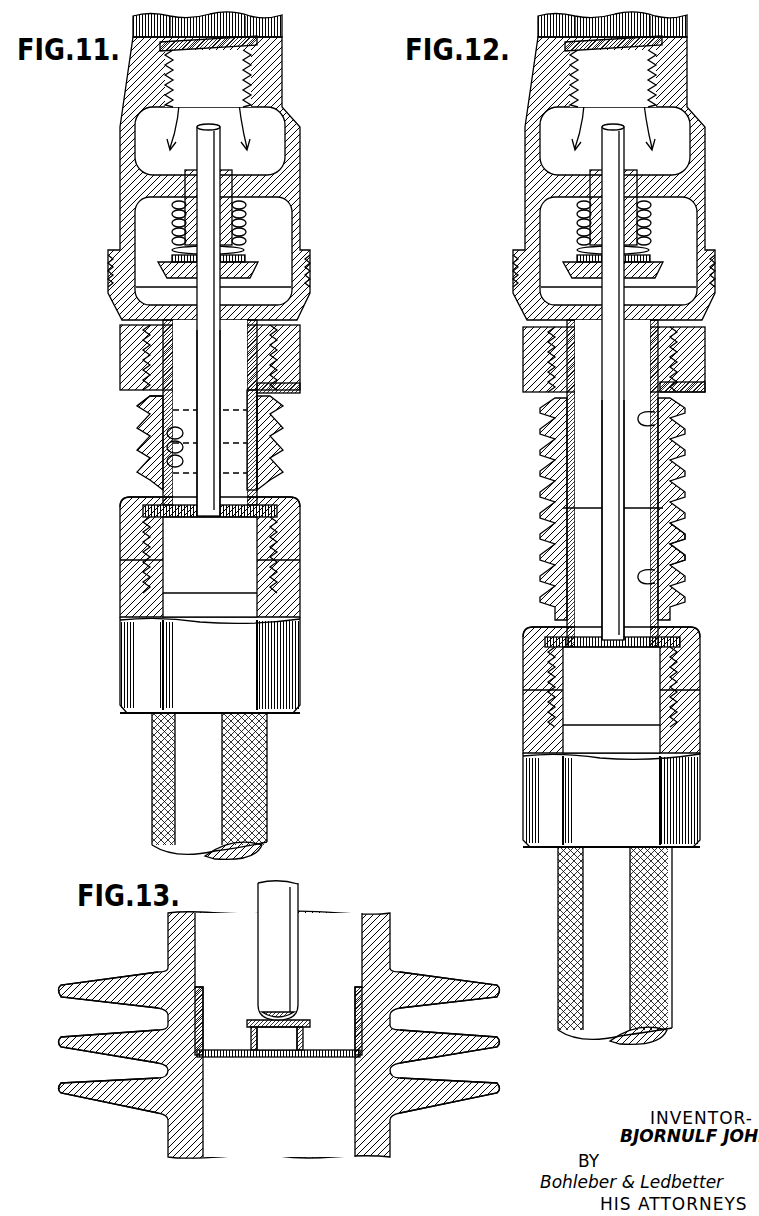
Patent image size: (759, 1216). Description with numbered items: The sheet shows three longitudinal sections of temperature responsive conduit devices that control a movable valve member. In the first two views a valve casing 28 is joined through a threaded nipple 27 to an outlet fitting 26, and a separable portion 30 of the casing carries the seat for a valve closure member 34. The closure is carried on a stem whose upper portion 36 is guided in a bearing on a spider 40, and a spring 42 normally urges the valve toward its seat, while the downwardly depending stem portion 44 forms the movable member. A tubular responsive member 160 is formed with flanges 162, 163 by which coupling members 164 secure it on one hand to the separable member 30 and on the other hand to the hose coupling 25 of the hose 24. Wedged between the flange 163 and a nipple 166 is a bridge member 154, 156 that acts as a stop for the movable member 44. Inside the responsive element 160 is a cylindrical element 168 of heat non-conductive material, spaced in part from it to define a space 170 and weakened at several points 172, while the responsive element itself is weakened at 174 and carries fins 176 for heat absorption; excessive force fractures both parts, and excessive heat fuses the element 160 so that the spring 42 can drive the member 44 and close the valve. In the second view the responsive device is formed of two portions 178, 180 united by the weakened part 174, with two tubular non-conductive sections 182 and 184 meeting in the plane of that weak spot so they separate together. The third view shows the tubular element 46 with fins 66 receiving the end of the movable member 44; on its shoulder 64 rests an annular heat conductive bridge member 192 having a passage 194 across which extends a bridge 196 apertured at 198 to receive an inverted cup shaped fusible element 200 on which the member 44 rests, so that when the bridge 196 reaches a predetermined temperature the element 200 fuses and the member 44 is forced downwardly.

In FIG. 11, the hose 24 is at (175, 770).
In FIG. 12, the hose 24 is at (655, 888).
In FIG. 11, the coupling member 25 is at (290, 606).
In FIG. 12, the coupling member 25 is at (690, 732).
In FIG. 11, the outlet fitting 26 is at (282, 24).
In FIG. 12, the outlet fitting 26 is at (635, 32).
In FIG. 11, the nipple 27 is at (257, 78).
In FIG. 12, the nipple 27 is at (648, 71).
In FIG. 11, the valve casing 28 is at (300, 127).
In FIG. 12, the valve casing 28 is at (626, 178).
In FIG. 11, the separable portion 30 is at (290, 303).
In FIG. 12, the separable portion 30 is at (624, 289).
In FIG. 11, the valve closure member 34 is at (252, 268).
In FIG. 12, the valve closure member 34 is at (624, 259).
In FIG. 11, the valve stem portion 36 is at (212, 160).
In FIG. 12, the valve stem portion 36 is at (617, 160).
In FIG. 11, the spider 40 is at (258, 186).
In FIG. 12, the spider 40 is at (666, 207).
In FIG. 11, the spring 42 is at (232, 227).
In FIG. 12, the spring 42 is at (626, 227).
In FIG. 11, the valve stem portion 44 is at (218, 497).
In FIG. 12, the valve stem portion 44 is at (608, 583).
In FIG. 13, the valve stem portion 44 is at (298, 953).
In FIG. 13, the supplemental tubular fitting 46 is at (372, 937).
In FIG. 13, the shoulder 64 is at (203, 1072).
In FIG. 13, the fins 66 is at (455, 990).
In FIG. 11, the bridge member 154 is at (244, 518).
In FIG. 12, the bridge member 154 is at (592, 648).
In FIG. 11, the bridge member 156 is at (200, 518).
In FIG. 12, the bridge member 156 is at (618, 648).
In FIG. 11, the tubular responsive member 160 is at (270, 428).
In FIG. 11, the flange 162 is at (272, 382).
In FIG. 12, the flange 162 is at (672, 380).
In FIG. 11, the flange 163 is at (283, 503).
In FIG. 12, the flange 163 is at (690, 628).
In FIG. 11, the coupling members 164 is at (298, 338).
In FIG. 12, the coupling members 164 is at (692, 340).
In FIG. 11, the nipple 166 is at (258, 552).
In FIG. 12, the nipple 166 is at (676, 705).
In FIG. 11, the cylindrical element 168 is at (160, 437).
In FIG. 11, the space 170 is at (258, 455).
In FIG. 12, the space 170 is at (612, 483).
In FIG. 11, the weakened points 172 is at (268, 408).
In FIG. 11, the weakened point 174 is at (275, 447).
In FIG. 12, the weakened point 174 is at (563, 509).
In FIG. 11, the fins 176 is at (140, 410).
In FIG. 12, the responsive device portion 178 is at (675, 440).
In FIG. 12, the responsive device portion 180 is at (672, 535).
In FIG. 12, the tubular section of non-conductive material 182 is at (665, 405).
In FIG. 12, the tubular section of non-conductive material 184 is at (662, 580).
In FIG. 13, the bridge member 192 is at (350, 1035).
In FIG. 13, the passage 194 is at (335, 1052).
In FIG. 13, the bridge 196 is at (302, 1052).
In FIG. 13, the aperture 198 is at (256, 1052).
In FIG. 13, the heat responsive element 200 is at (288, 1032).